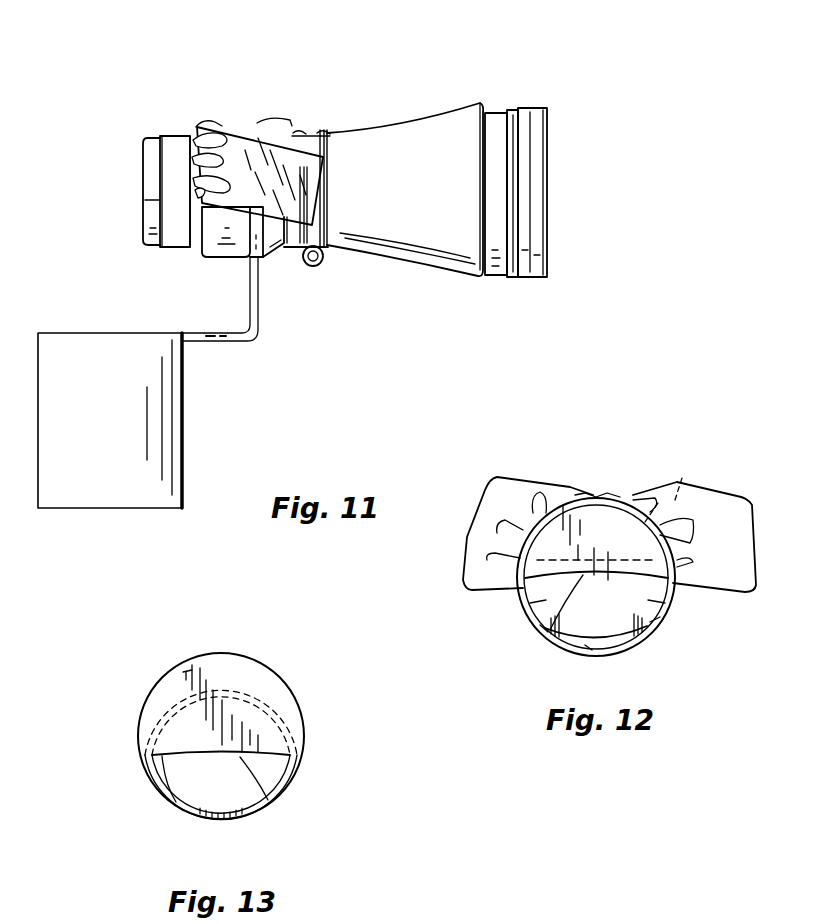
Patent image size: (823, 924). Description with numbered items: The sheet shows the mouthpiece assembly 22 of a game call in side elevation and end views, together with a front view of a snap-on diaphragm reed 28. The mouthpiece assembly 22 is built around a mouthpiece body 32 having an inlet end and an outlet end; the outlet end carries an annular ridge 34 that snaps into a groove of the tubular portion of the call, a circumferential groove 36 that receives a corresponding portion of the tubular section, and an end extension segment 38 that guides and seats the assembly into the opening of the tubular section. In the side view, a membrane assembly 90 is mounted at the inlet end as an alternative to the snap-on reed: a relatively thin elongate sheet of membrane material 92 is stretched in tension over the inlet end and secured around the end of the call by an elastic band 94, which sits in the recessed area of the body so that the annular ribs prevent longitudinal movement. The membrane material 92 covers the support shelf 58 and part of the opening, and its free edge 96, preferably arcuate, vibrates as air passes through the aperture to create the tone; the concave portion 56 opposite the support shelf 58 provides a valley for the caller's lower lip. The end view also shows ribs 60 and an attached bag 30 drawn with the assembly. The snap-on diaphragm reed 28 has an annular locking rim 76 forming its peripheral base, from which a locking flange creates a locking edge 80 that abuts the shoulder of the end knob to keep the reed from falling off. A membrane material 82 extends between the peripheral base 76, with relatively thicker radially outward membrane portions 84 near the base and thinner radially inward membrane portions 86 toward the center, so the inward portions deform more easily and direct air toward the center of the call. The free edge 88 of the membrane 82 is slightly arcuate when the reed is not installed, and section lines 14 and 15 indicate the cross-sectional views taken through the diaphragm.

In FIG. 13, the section line 14- 14 is at (220, 640).
In FIG. 13, the section line 15- 15 is at (128, 748).
In FIG. 11, the mouthpiece assembly 22 is at (478, 82).
In FIG. 13, the snap-on diaphragm reed 28 is at (276, 670).
In FIG. 11, the drainage bag 30 is at (186, 452).
In FIG. 11, the mouthpiece body 32 is at (390, 118).
In FIG. 12, the mouthpiece body 32 is at (565, 625).
In FIG. 11, the annular ridge 34 is at (512, 282).
In FIG. 11, the circumferential groove 36 is at (492, 282).
In FIG. 11, the end extension segment 38 is at (537, 107).
In FIG. 12, the concave portion 56 is at (585, 648).
In FIG. 12, the support shelf 58 is at (672, 507).
In FIG. 12, the ribs 60 is at (540, 602).
In FIG. 13, the annular locking rim 76 is at (297, 770).
In FIG. 13, the locking edge 80 is at (173, 803).
In FIG. 13, the membrane material 82 is at (220, 708).
In FIG. 13, the radially outward membrane portions 84 is at (173, 760).
In FIG. 13, the radially inward membrane portions 86 is at (221, 760).
In FIG. 13, the free edge 88 is at (262, 796).
In FIG. 11, the applicator 90 is at (125, 137).
In FIG. 12, the applicator 90 is at (598, 488).
In FIG. 11, the membrane material 92 is at (150, 140).
In FIG. 12, the membrane material 92 is at (609, 534).
In FIG. 11, the elastic band 94 is at (175, 150).
In FIG. 12, the elastic band 94 is at (657, 622).
In FIG. 12, the free edge 96 is at (540, 630).